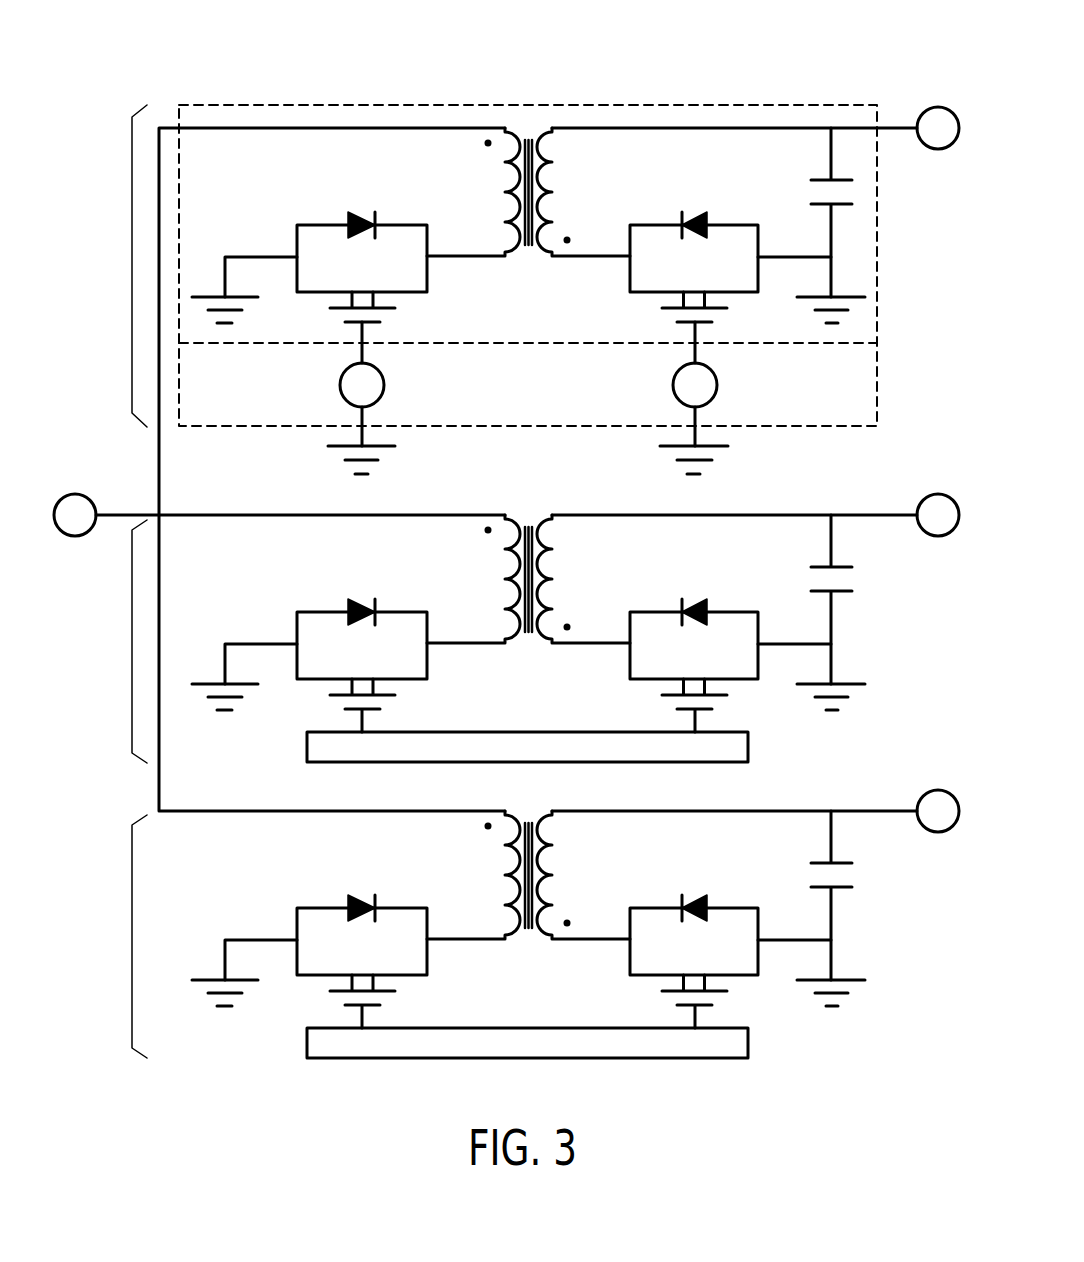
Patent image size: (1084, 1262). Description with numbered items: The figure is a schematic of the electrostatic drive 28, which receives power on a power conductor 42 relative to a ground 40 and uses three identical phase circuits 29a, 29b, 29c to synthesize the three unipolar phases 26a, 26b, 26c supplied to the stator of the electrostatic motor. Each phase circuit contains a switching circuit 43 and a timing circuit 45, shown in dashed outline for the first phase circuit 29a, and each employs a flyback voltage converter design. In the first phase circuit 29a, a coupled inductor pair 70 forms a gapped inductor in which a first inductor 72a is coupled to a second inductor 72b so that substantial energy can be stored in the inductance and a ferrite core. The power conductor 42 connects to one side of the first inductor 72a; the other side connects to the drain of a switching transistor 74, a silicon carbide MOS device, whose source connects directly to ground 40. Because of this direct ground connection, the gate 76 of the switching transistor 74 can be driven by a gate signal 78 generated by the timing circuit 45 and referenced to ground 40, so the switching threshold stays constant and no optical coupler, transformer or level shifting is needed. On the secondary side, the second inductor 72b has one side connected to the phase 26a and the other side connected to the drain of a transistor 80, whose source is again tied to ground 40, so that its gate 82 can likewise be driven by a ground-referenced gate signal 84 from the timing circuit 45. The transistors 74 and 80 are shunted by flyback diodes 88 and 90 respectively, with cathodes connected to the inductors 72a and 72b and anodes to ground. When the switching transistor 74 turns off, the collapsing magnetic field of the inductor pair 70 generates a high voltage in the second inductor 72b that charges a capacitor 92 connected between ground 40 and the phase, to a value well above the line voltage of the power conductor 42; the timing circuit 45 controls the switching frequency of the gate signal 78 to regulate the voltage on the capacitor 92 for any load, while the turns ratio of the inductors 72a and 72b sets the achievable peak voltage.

The electrostatic drive 28 is at (168, 73).
The power conductor 42 is at (105, 513).
The phase 26a is at (900, 126).
The phase 26b is at (886, 515).
The phase 26c is at (886, 811).
The switching circuit 43 is at (210, 105).
The timing circuit 45 is at (877, 357).
The ground 40 is at (260, 255).
The phase circuit 29a is at (130, 265).
The phase circuit 29b is at (130, 642).
The phase circuit 29c is at (130, 938).
The coupled inductor pair 70 is at (539, 151).
The first inductor 72a is at (515, 190).
The second inductor 72b is at (545, 168).
The switching transistor 74 is at (368, 228).
The flyback diode 88 is at (363, 210).
The gate 76 is at (360, 350).
The gate signal 78 is at (387, 385).
The transistor 80 is at (686, 236).
The flyback diode 90 is at (686, 211).
The gate 82 is at (697, 352).
The gate signal 84 is at (672, 385).
The capacitor 92 is at (842, 180).